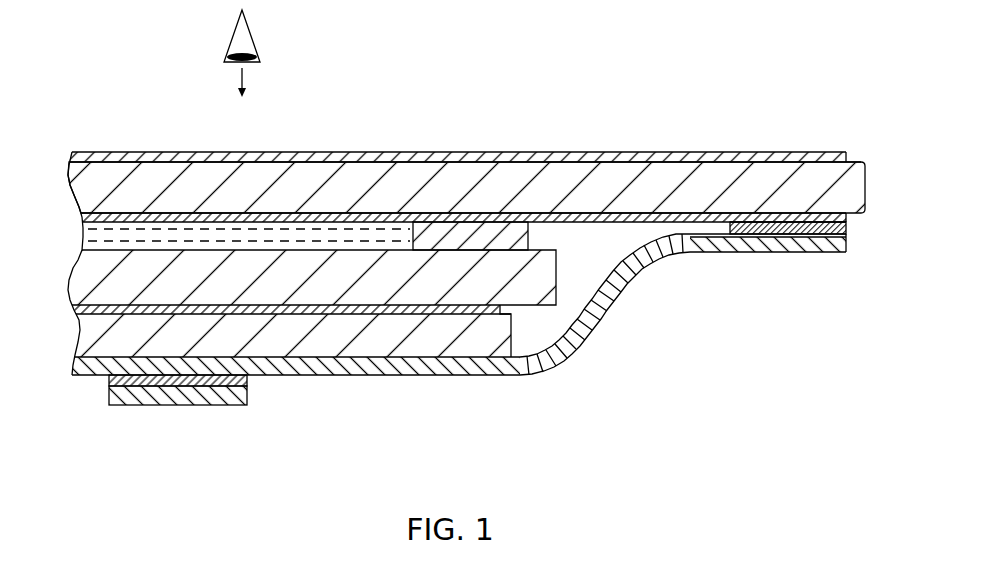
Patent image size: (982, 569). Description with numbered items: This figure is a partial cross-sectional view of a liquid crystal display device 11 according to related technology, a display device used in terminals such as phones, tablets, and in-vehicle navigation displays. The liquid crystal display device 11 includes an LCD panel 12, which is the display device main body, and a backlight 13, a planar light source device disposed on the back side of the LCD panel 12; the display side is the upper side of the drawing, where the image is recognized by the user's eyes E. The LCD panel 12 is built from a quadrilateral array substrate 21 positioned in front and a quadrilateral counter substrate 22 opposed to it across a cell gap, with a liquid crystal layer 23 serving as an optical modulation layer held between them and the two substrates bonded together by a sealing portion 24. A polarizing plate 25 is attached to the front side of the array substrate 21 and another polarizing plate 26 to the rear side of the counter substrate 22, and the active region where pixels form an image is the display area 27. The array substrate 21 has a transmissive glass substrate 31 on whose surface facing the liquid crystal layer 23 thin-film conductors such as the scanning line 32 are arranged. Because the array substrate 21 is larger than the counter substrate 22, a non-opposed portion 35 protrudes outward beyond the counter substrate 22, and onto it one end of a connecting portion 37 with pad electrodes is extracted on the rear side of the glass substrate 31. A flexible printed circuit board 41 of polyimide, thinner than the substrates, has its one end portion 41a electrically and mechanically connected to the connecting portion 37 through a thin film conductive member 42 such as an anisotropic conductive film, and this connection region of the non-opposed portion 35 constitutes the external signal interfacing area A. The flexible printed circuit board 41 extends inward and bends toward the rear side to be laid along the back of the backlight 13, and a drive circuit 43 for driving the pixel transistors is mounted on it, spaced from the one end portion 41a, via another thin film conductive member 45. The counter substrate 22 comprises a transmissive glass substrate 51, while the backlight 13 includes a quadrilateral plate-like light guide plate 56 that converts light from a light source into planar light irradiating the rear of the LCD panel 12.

The user's eyes E is at (253, 33).
The liquid crystal display device 11 is at (668, 96).
The LCD panel 12 is at (60, 152).
The backlight 13 is at (60, 317).
The array substrate 21 is at (435, 180).
The counter substrate 22 is at (300, 295).
The liquid crystal layer 23 is at (177, 232).
The sealing portion 24 is at (507, 222).
The polarizing plate 25 is at (587, 158).
The polarizing plate 26 is at (385, 310).
The display area 27 is at (413, 119).
The glass substrate 31 is at (676, 176).
The scanning line 32 is at (355, 217).
The non-opposed portion 35 is at (747, 216).
The connecting portion 37 is at (778, 218).
The flexible printed circuit board 41 is at (610, 289).
The one end portion 41a is at (787, 247).
The thin film conductive member 42 is at (832, 236).
The drive circuit 43 is at (170, 395).
The thin film conductive member 45 is at (218, 384).
The glass substrate 51 is at (337, 293).
The light guide plate 56 is at (442, 340).
The external signal interfacing area A is at (555, 375).